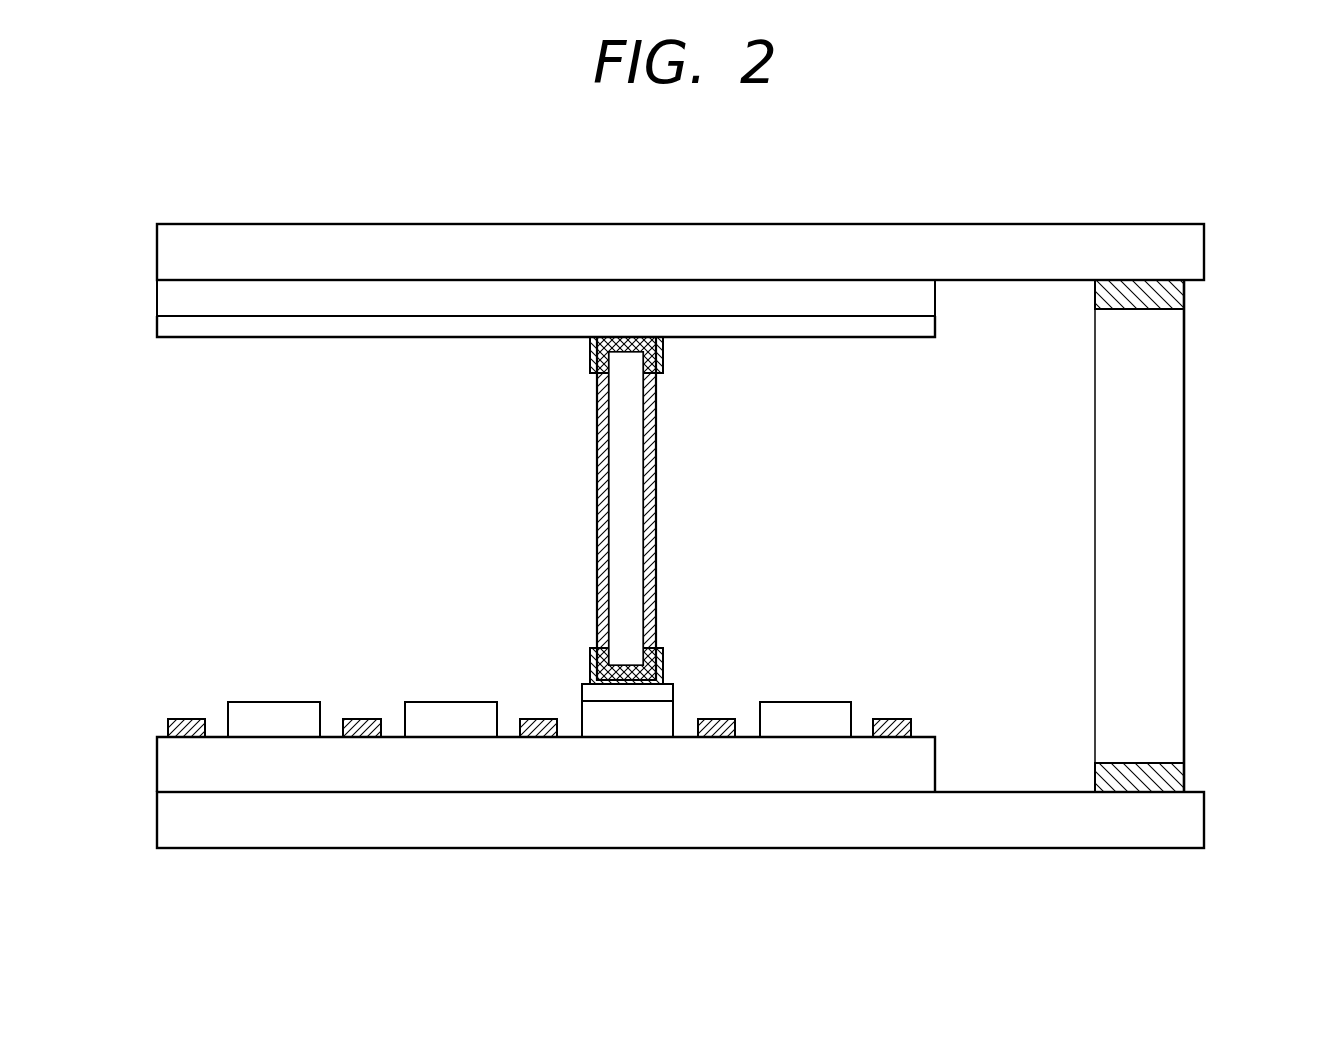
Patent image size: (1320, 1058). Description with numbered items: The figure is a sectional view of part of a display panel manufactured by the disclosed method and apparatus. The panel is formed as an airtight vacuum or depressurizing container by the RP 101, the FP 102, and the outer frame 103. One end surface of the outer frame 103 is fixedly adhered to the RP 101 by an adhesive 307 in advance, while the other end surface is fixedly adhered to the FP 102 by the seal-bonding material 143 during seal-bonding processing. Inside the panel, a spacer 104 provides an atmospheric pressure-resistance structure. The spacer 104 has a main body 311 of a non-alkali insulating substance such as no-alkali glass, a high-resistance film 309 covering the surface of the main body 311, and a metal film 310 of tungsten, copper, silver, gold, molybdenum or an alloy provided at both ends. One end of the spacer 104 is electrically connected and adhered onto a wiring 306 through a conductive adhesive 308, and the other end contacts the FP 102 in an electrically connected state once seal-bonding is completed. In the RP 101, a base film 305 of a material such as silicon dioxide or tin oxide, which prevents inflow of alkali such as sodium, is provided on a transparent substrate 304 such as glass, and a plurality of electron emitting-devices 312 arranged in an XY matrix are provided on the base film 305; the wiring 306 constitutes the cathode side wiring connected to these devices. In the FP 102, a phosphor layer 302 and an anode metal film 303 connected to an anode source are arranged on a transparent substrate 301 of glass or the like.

The RP 101 is at (648, 772).
The FP 102 is at (648, 275).
The outer frame 103 is at (1200, 536).
The spacer 104 is at (632, 510).
The seal-bonding material 143 is at (1170, 298).
The transparent substrate 301 is at (706, 238).
The phosphor layer 302 is at (479, 294).
The anode metal film 303 is at (315, 325).
The transparent substrate 304 is at (857, 833).
The base film 305 is at (925, 763).
The wiring 306 is at (818, 708).
The adhesive 307 is at (1170, 776).
The conductive adhesive 308 is at (590, 695).
The high-resistance film 309 is at (598, 514).
The metal film 310 is at (592, 352).
The main body 311 is at (626, 443).
The electron emitting-devices 312 is at (714, 718).